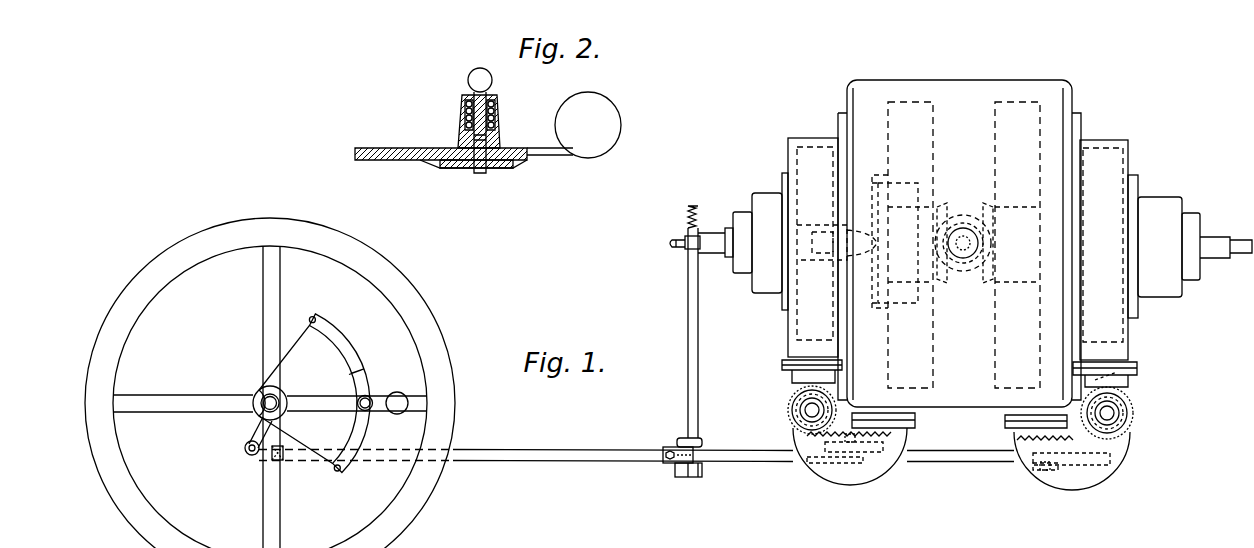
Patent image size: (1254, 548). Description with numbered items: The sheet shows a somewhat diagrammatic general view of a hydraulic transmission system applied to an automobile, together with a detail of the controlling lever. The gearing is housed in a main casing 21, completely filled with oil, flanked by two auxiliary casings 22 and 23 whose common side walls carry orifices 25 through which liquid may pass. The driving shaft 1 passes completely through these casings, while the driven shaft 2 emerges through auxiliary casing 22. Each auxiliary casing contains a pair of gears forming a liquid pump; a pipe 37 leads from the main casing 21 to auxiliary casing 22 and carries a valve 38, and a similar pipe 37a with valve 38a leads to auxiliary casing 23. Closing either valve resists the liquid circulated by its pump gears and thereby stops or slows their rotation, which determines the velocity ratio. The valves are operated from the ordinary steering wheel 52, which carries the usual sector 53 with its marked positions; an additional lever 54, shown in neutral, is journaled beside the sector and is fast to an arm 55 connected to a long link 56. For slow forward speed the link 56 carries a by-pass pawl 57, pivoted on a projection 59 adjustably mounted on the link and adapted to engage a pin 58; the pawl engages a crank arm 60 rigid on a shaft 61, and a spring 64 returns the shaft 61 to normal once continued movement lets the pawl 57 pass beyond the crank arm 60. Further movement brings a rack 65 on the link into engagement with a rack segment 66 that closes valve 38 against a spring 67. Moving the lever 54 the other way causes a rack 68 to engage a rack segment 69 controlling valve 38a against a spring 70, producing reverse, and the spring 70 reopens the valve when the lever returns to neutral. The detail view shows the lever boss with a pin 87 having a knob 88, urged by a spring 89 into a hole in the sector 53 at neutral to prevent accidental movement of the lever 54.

In FIG. 1, the driving shaft 1 is at (718, 243).
In FIG. 1, the driven shaft 2 is at (1215, 238).
In FIG. 1, the main casing 21 is at (977, 397).
In FIG. 1, the auxiliary casing 22 is at (1125, 350).
In FIG. 1, the auxiliary casing 23 is at (803, 140).
In FIG. 1, the orifices 25 is at (1140, 237).
In FIG. 1, the pipe 37 is at (1075, 470).
In FIG. 1, the pipe 37a is at (868, 470).
In FIG. 1, the valve 38 is at (1110, 410).
In FIG. 1, the valve 38a is at (807, 410).
In FIG. 1, the steering wheel 52 is at (338, 237).
In FIG. 1, the sector 53 is at (347, 347).
In FIG. 2, the sector 53 is at (503, 170).
In FIG. 1, the lever 54 is at (357, 390).
In FIG. 2, the lever 54 is at (550, 160).
In FIG. 1, the arm 55 is at (253, 432).
In FIG. 1, the link 56 is at (522, 453).
In FIG. 1, the by-pass pawl 57 is at (703, 468).
In FIG. 1, the pin 58 is at (673, 465).
In FIG. 1, the projection 59 is at (673, 448).
In FIG. 1, the crank arm 60 is at (708, 452).
In FIG. 1, the shaft 61 is at (697, 355).
In FIG. 1, the spring 64 is at (698, 213).
In FIG. 1, the rack 65 is at (1047, 482).
In FIG. 1, the rack segment 66 is at (1103, 445).
In FIG. 1, the spring 67 is at (1117, 372).
In FIG. 1, the rack 68 is at (850, 440).
In FIG. 1, the rack segment 69 is at (810, 427).
In FIG. 1, the spring 70 is at (807, 380).
In FIG. 2, the pin 87 is at (462, 140).
In FIG. 1, the knob 88 is at (360, 410).
In FIG. 2, the knob 88 is at (478, 68).
In FIG. 2, the spring 89 is at (465, 103).